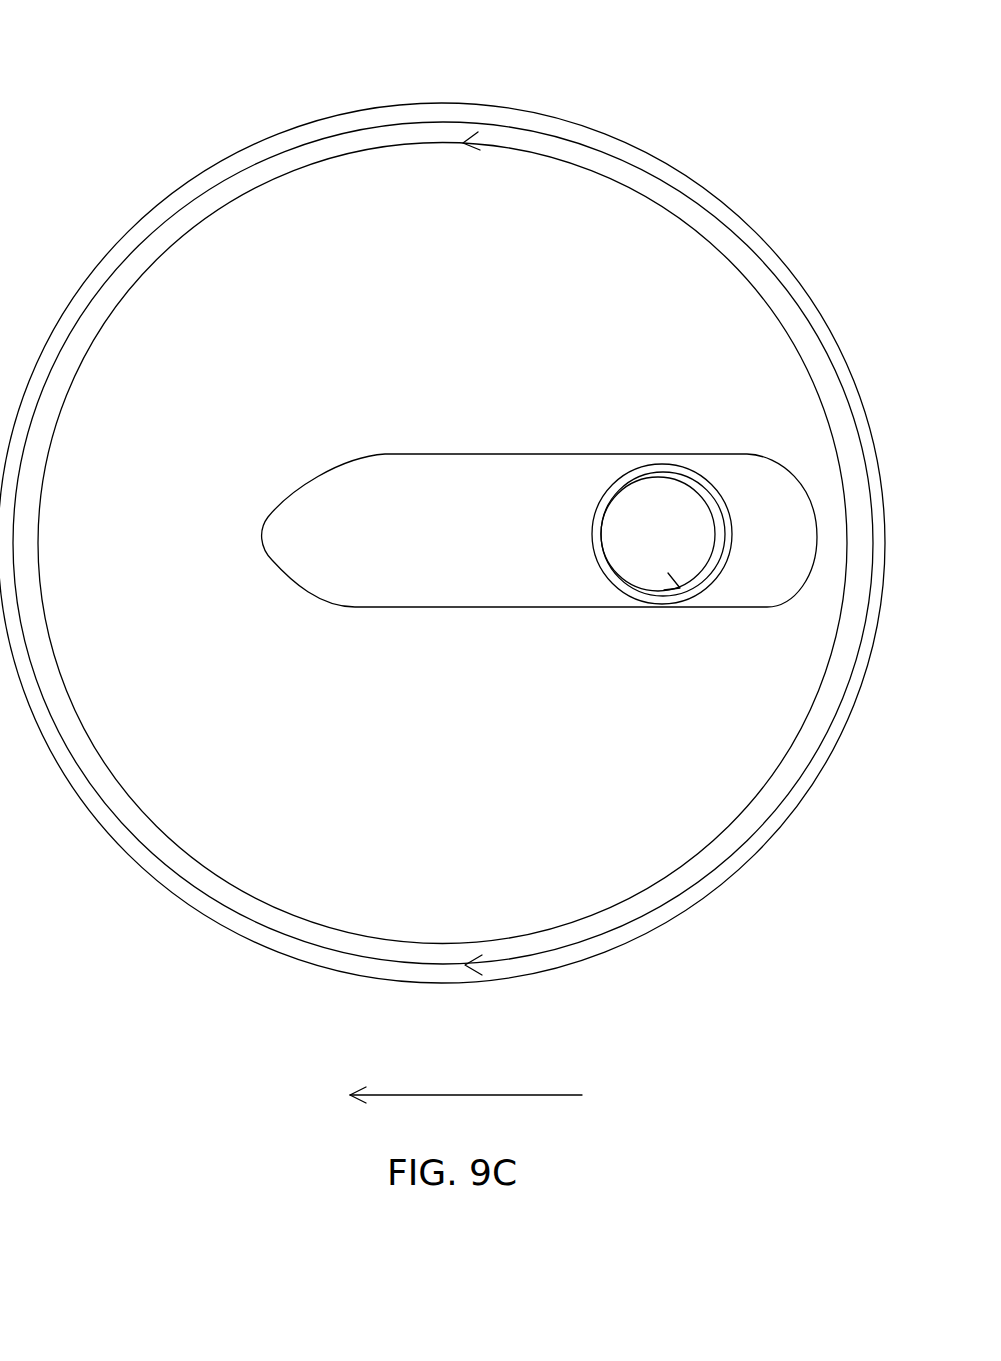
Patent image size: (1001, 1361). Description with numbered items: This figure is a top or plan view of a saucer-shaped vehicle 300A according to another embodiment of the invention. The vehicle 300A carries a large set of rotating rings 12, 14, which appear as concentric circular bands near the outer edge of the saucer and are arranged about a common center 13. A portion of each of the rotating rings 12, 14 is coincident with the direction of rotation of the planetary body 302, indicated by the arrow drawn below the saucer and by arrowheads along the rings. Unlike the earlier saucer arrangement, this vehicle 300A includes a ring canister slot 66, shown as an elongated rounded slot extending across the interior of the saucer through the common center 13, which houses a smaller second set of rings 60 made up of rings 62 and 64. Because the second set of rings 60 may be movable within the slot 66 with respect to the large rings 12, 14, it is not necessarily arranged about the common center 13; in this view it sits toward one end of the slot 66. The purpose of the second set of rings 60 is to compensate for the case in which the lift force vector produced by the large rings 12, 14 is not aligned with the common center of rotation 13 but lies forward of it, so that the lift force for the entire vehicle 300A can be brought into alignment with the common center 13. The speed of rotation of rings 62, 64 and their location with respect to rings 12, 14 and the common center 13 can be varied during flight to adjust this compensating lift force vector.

The saucer-shaped vehicle 300A is at (285, 128).
The rotating ring 12 is at (440, 128).
The rotating ring 14 is at (463, 143).
The common center 13 is at (462, 535).
The second set of rings 60 is at (638, 419).
The ring 62 is at (672, 465).
The ring 64 is at (630, 483).
The ring canister slot 66 is at (322, 466).
The direction of rotation of the planetary body 302 is at (562, 1094).